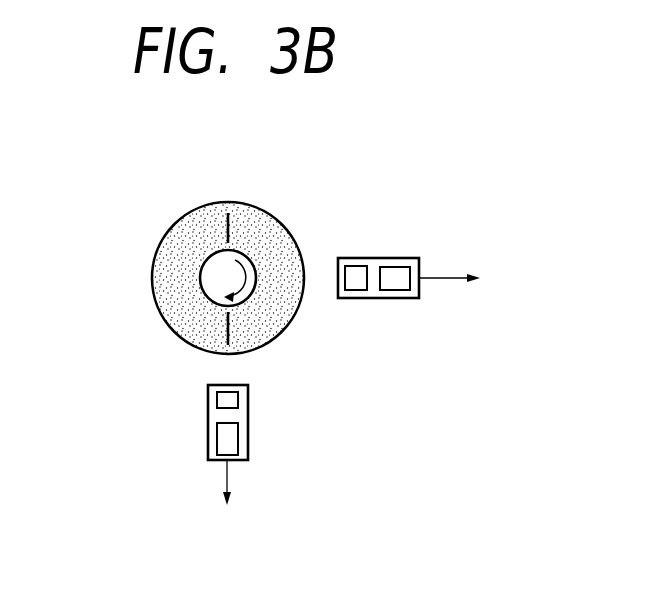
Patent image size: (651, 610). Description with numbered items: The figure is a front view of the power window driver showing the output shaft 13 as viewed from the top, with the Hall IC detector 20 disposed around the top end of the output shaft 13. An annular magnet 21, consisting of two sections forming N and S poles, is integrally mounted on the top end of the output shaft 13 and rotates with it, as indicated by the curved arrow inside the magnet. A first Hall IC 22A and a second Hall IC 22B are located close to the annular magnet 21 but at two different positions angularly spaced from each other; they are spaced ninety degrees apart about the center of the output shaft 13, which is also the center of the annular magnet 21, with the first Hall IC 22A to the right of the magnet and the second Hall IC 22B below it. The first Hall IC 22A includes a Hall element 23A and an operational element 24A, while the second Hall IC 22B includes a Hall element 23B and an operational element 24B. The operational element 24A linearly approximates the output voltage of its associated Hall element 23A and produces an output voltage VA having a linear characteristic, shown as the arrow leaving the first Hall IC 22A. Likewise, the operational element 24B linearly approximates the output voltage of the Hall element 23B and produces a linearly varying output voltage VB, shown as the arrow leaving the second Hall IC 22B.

The output shaft 13 is at (220, 263).
The Hall IC detector 20 is at (127, 236).
The annular magnet 21 is at (267, 220).
The first Hall IC 22A is at (375, 261).
The Hall element 23A is at (355, 288).
The operational element 24A is at (405, 289).
The second Hall IC 22B is at (248, 417).
The Hall element 23B is at (216, 402).
The operational element 24B is at (215, 443).